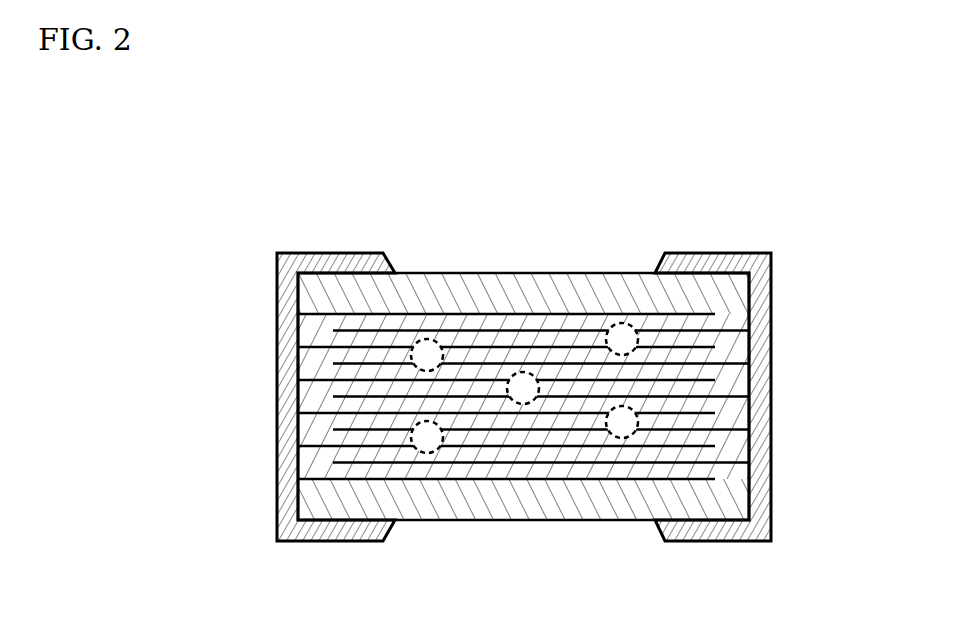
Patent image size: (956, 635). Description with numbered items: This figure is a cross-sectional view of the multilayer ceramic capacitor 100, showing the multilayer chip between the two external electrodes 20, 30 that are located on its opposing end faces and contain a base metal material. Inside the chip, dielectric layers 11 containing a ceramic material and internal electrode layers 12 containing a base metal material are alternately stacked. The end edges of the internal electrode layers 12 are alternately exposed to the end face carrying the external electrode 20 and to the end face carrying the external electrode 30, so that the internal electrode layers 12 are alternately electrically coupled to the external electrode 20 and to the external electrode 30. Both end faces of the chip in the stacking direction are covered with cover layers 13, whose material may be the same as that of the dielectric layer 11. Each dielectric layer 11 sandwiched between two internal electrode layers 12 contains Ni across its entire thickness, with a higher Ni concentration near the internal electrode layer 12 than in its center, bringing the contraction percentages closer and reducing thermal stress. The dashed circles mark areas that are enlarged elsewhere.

The multilayer ceramic capacitor 100 is at (524, 357).
The external electrode 20 is at (302, 267).
The external electrode 30 is at (748, 266).
The cover layer 13 is at (445, 285).
The internal electrode layer 12 is at (515, 432).
The dielectric layer 11 is at (615, 452).